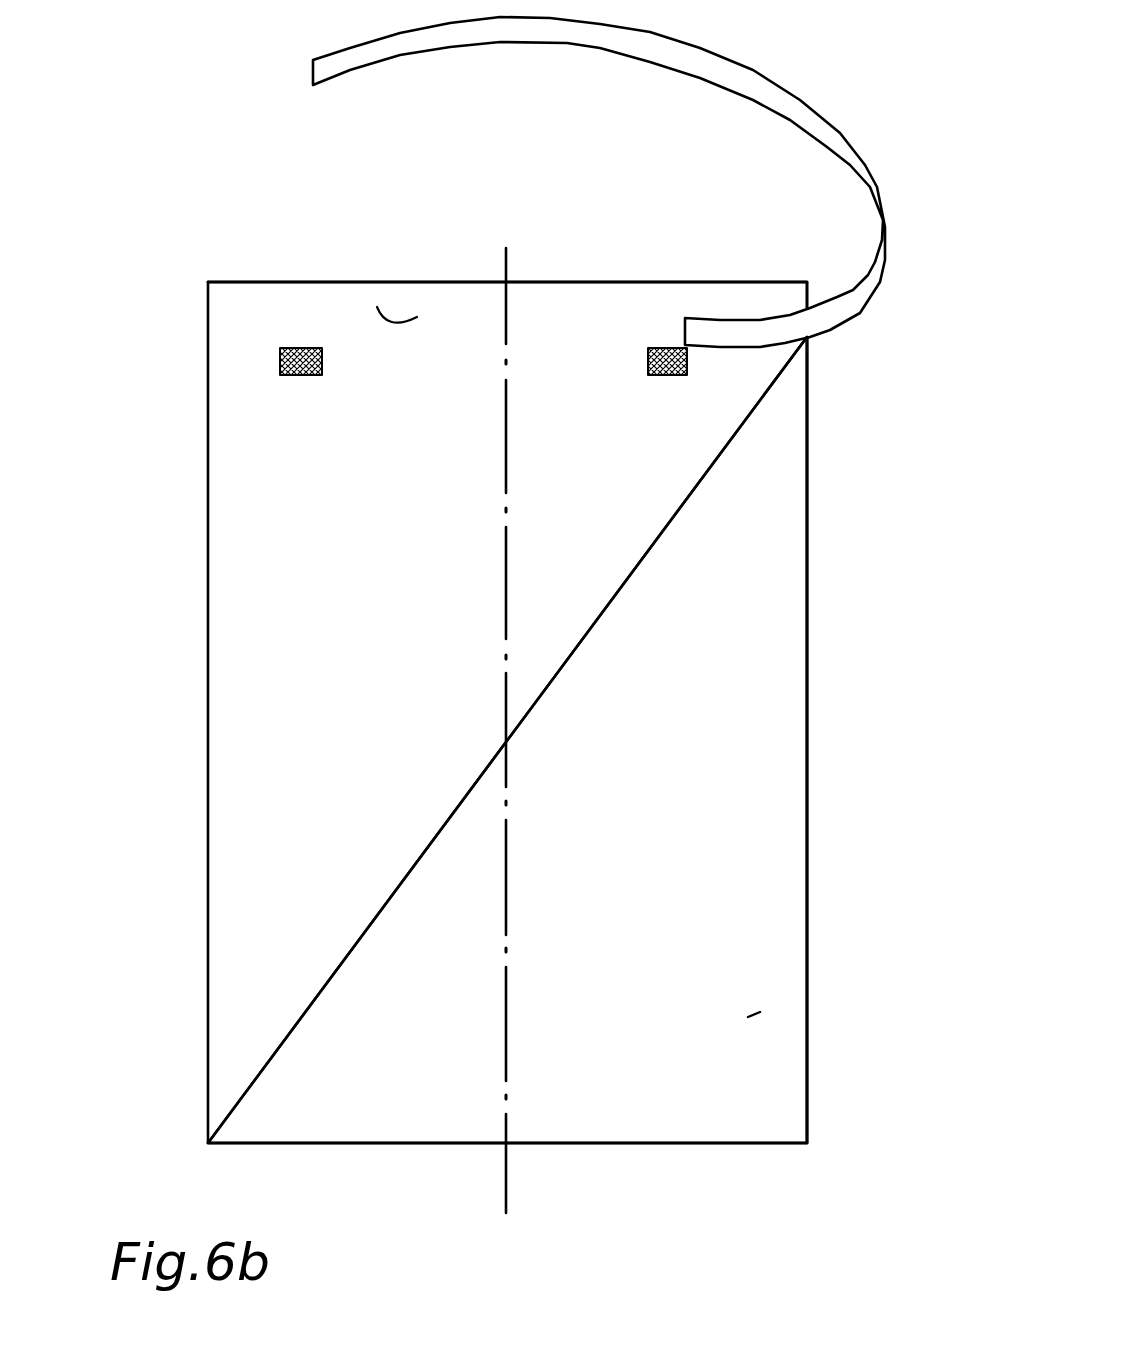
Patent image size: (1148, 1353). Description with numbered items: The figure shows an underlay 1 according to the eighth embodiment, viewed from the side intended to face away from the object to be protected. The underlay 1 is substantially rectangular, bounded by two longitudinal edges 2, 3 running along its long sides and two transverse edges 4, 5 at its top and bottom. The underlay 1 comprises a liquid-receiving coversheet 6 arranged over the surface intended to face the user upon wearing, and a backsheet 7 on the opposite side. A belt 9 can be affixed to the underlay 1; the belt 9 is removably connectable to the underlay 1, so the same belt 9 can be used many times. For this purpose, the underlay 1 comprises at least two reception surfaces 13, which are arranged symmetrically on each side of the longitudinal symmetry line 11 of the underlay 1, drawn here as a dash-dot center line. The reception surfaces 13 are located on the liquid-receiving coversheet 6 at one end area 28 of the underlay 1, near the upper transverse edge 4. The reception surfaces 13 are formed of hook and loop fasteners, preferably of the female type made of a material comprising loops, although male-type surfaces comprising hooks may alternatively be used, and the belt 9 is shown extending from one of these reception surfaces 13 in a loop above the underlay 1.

The underlay 1 is at (167, 303).
The longitudinal edge 2 is at (807, 760).
The longitudinal edge 3 is at (208, 593).
The transverse edge 4 is at (620, 281).
The transverse edge 5 is at (588, 1143).
The liquid-receiving coversheet 6 is at (662, 717).
The backsheet 7 is at (770, 1005).
The belt 9 is at (758, 85).
The longitudinal symmetry line 11 is at (504, 1178).
The reception surfaces 13 is at (278, 361).
The end area 28 is at (377, 307).